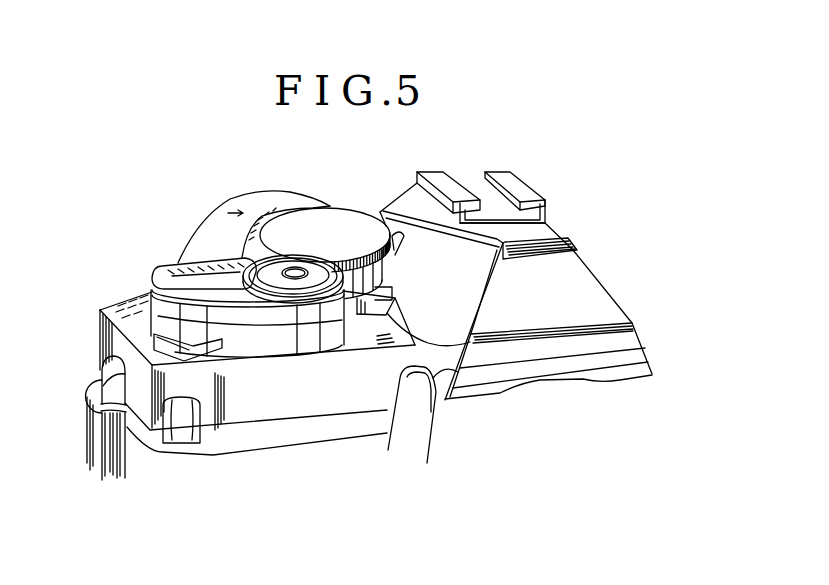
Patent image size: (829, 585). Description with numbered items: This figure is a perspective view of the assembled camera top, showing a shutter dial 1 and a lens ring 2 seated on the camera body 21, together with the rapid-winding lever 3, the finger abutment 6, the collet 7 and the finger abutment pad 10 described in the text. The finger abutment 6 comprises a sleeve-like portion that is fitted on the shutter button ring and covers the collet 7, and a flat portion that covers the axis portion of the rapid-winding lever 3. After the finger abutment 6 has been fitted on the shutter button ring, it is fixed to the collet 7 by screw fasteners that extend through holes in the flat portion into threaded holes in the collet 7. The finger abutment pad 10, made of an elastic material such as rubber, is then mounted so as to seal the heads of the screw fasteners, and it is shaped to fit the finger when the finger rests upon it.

The shutter speed dial 1 is at (358, 212).
The lens ring 2 is at (315, 268).
The rapid-winding lever 3 is at (259, 196).
The finger abutment 6 is at (275, 313).
The collet 7 is at (307, 348).
The finger abutment pad 10 is at (168, 276).
The camera body 21 is at (97, 350).